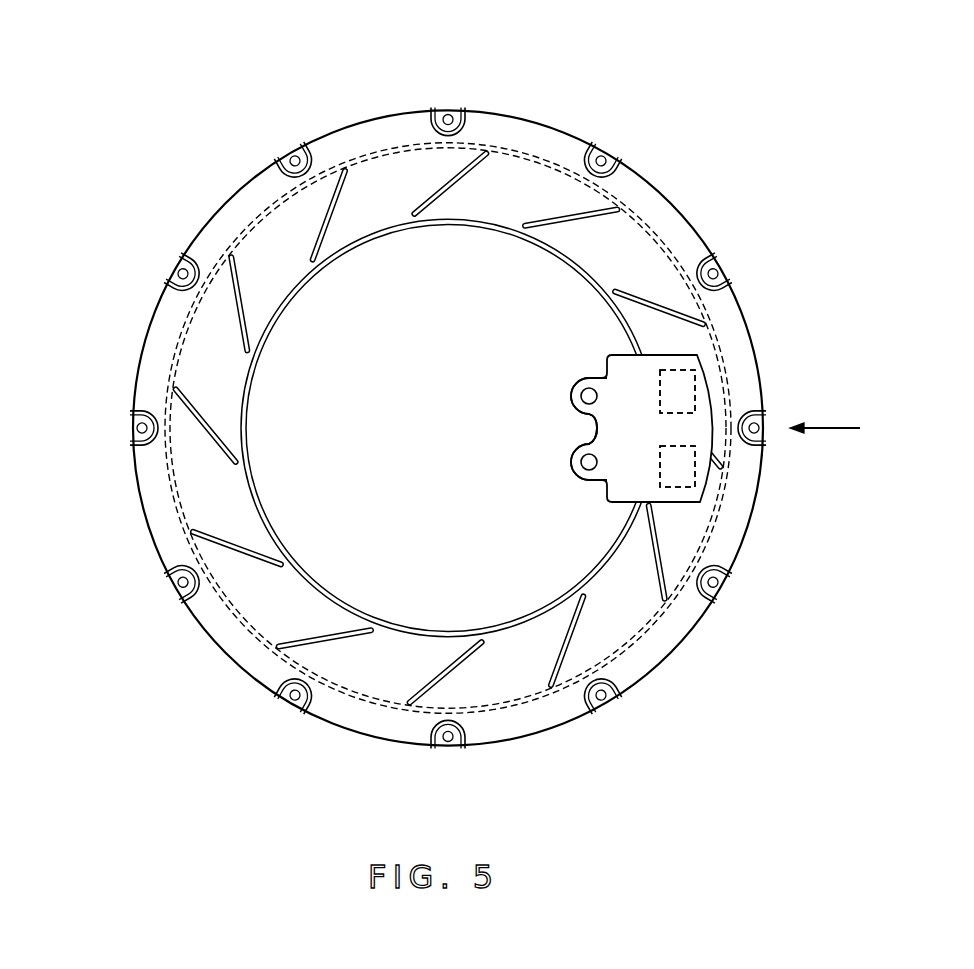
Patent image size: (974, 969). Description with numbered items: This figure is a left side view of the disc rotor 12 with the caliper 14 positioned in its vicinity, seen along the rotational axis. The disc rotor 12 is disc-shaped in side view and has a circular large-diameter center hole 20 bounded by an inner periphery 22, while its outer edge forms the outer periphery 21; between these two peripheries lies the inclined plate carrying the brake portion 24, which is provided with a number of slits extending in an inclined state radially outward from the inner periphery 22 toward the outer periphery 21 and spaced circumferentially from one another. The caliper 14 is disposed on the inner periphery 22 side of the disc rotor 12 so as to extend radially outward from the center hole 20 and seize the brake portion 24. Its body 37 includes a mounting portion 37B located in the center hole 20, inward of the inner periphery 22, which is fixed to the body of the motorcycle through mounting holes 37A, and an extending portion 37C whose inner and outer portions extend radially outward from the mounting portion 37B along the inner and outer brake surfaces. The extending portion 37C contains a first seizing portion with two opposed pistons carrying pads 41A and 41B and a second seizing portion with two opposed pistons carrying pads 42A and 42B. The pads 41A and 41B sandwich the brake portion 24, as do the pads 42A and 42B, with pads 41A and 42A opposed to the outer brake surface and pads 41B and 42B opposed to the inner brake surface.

The disc rotor 12 is at (767, 248).
The caliper 14 is at (702, 355).
The center hole 20 is at (317, 307).
The outer periphery 21 is at (676, 206).
The inner periphery 22 is at (478, 228).
The brake portion 24 is at (657, 525).
The body 37 is at (607, 357).
The mounting holes 37A is at (582, 458).
The mounting portion 37B is at (582, 378).
The extending portion 37C is at (662, 347).
The pad 41A is at (695, 390).
The pad 41B is at (796, 390).
The pad 42A is at (697, 483).
The pad 42B is at (796, 475).